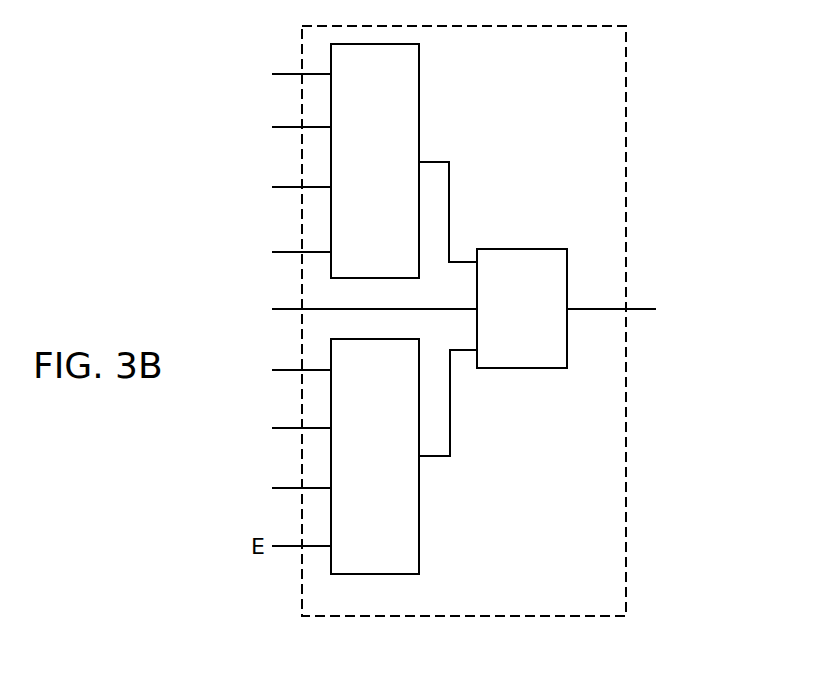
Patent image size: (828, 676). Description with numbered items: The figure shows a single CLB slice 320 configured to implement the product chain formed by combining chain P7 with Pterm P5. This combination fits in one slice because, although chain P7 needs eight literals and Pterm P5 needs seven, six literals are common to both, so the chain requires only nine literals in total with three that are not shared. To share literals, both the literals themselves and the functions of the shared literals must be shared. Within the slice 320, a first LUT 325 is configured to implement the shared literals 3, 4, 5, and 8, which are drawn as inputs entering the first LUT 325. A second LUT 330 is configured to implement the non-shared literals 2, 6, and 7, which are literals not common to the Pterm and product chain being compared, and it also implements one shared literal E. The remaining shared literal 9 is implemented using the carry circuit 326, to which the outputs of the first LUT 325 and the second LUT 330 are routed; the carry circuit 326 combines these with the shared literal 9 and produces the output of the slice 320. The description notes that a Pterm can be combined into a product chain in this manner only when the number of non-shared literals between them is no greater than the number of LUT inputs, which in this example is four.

The slice 320 is at (519, 321).
The first LUT 325 is at (429, 161).
The carry circuit 326 is at (566, 291).
The second LUT 330 is at (430, 456).
The non-shared literal 2 is at (291, 370).
The shared literal 3 is at (291, 74).
The shared literal 4 is at (291, 127).
The shared literal 5 is at (291, 191).
The non-shared literal 6 is at (291, 430).
The non-shared literal 7 is at (291, 489).
The shared literal 8 is at (291, 252).
The shared literal 9 is at (364, 311).